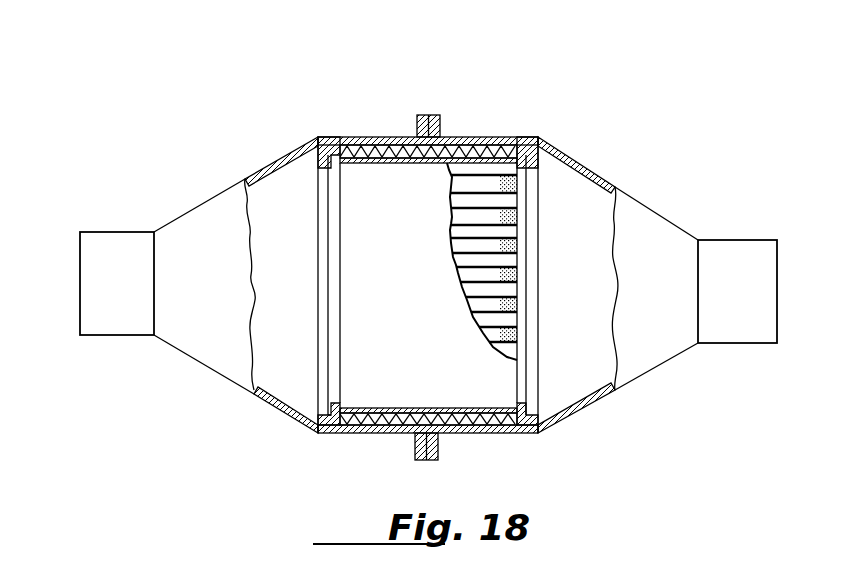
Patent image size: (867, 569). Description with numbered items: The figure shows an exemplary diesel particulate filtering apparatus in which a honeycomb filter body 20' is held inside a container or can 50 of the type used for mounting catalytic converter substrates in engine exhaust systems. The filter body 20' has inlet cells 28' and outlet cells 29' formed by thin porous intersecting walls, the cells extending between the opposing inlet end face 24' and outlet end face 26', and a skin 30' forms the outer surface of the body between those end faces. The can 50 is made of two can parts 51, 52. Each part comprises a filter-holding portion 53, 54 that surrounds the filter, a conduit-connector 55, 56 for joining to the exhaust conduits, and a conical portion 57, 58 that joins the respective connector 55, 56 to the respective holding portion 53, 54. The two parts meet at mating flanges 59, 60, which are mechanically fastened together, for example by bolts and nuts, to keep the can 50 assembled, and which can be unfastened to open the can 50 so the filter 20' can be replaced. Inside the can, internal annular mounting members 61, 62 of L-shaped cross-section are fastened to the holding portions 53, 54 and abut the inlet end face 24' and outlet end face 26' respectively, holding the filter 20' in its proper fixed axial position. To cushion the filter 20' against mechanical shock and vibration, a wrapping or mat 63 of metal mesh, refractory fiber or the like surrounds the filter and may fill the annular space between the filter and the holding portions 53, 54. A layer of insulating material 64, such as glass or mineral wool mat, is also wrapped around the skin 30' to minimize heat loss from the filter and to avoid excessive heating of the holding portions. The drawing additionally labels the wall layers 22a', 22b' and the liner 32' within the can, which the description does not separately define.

The container or can 50 is at (361, 124).
The filter body 20' is at (416, 134).
The mating flange 59 is at (417, 121).
The mating flange 60 is at (441, 118).
The layer of insulating material 64 is at (398, 425).
The upper insulation layer 22a' is at (467, 131).
The spacer blocks 22b' is at (540, 259).
The wrapping or mat 63 is at (453, 433).
The filter-holding portion 53 is at (350, 443).
The filter-holding portion 54 is at (507, 435).
The internal annular mounting member 61 is at (323, 315).
The internal annular mounting member 62 is at (530, 295).
The inlet end face 24' is at (306, 285).
The outlet end face 26' is at (561, 285).
The liner plate 32' is at (471, 204).
The can part 51 is at (288, 155).
The can part 52 is at (572, 160).
The conical portion 57 is at (197, 325).
The conical portion 58 is at (658, 335).
The conduit-connector 55 is at (118, 252).
The conduit-connector 56 is at (731, 255).
The inlet cells 28' is at (463, 261).
The outlet cells 29' is at (462, 270).
The skin 30' is at (422, 338).